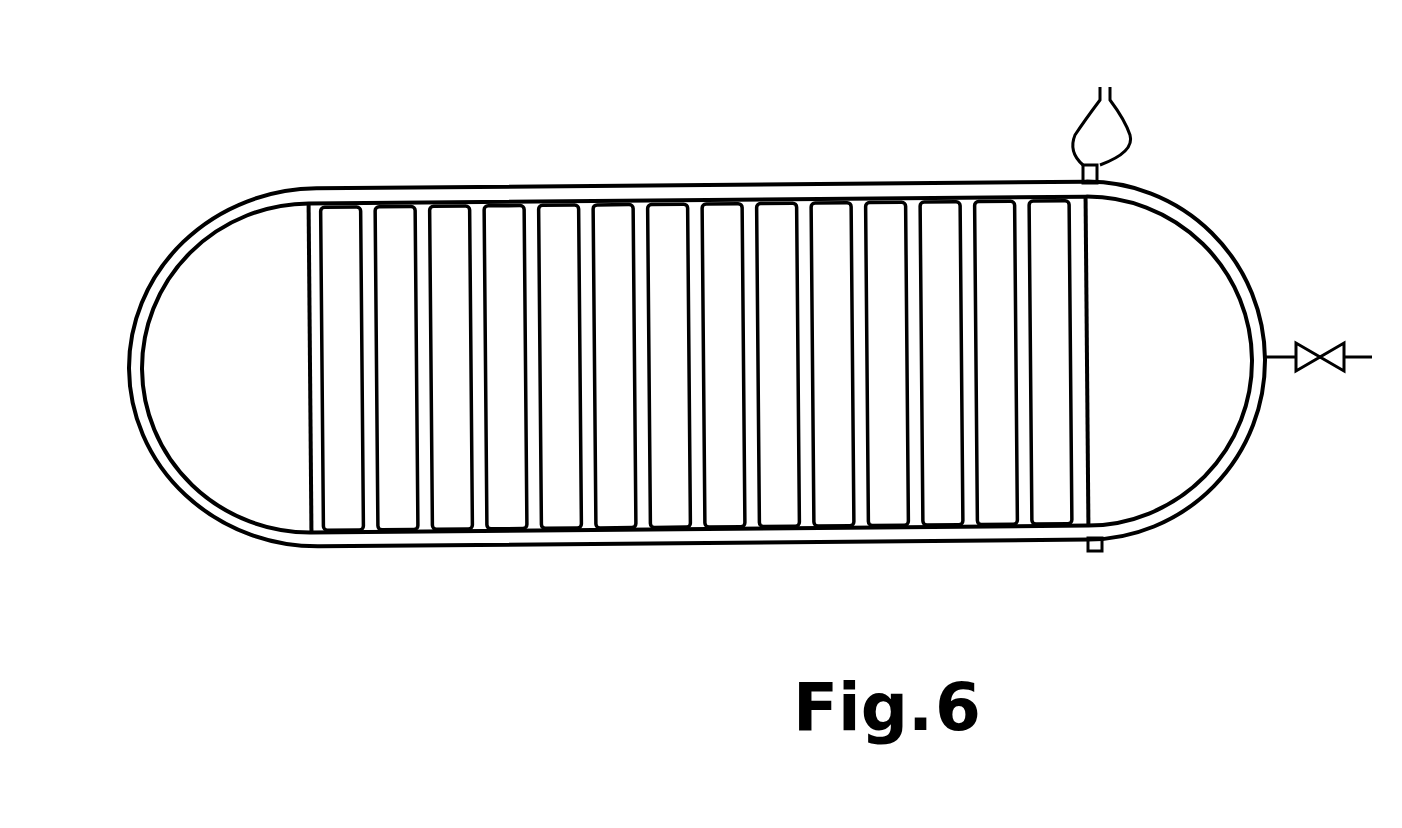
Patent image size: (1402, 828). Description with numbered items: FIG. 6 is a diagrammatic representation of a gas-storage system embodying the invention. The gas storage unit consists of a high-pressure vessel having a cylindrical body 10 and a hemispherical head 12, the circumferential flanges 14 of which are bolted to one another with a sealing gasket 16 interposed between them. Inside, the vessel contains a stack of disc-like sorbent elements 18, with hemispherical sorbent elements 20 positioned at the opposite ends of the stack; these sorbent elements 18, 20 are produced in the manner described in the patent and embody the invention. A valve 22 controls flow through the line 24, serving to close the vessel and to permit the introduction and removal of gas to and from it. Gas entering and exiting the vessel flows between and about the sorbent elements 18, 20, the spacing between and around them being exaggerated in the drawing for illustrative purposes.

The cylindrical body 10 is at (388, 562).
The hemispherical head 12 is at (1212, 212).
The circumferential flanges 14 is at (1103, 552).
The sealing gasket 16 is at (1105, 114).
The disc-like sorbent elements 18 is at (350, 232).
The hemispherical sorbent elements 20 is at (192, 433).
The valve 22 is at (1320, 352).
The line 24 is at (1365, 360).